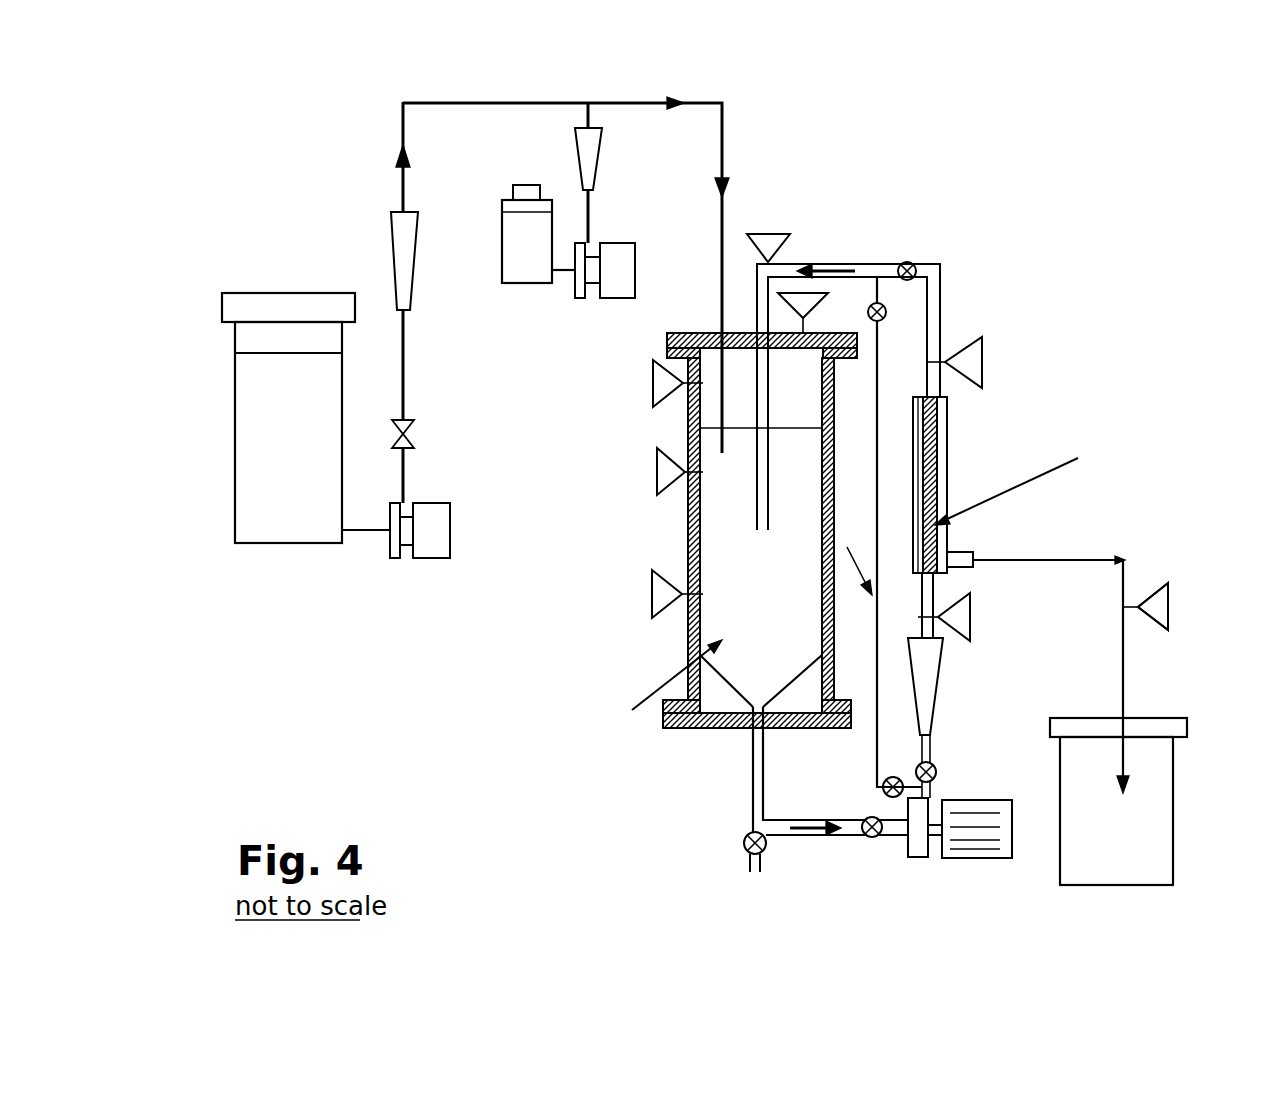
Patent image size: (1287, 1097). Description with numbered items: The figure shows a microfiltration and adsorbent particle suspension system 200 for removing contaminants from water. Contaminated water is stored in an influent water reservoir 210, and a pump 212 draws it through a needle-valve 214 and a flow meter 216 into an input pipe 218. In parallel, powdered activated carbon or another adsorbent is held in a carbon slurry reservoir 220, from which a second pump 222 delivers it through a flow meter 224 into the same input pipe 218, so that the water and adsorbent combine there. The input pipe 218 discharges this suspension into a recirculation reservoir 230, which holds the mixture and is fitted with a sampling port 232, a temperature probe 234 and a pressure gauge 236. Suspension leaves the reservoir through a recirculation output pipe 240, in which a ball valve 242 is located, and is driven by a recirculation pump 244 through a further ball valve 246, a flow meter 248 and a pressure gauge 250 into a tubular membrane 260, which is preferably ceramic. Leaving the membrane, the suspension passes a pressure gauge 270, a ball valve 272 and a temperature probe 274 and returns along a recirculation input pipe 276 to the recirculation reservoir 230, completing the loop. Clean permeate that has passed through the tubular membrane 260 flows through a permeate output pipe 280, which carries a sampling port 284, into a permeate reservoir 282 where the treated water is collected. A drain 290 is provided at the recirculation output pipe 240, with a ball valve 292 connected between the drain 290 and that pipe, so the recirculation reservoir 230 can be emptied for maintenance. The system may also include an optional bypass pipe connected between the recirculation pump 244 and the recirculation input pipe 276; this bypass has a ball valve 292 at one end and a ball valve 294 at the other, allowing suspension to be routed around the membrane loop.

The microfiltration and adsorbent particle suspension system 200 is at (380, 670).
The influent water reservoir 210 is at (284, 527).
The pump 212 is at (427, 548).
The needle-valve 214 is at (407, 437).
The flow meter 216 is at (400, 250).
The input pipe 218 is at (728, 150).
The carbon slurry reservoir 220 is at (515, 243).
The pump 222 is at (618, 250).
The flow meter 224 is at (590, 162).
The recirculation reservoir 230 is at (742, 592).
The sampling port 232 is at (653, 585).
The temperature probe 234 is at (657, 471).
The pressure gauge 236 is at (654, 392).
The recirculation output pipe 240 is at (842, 835).
The ball valve 242 is at (868, 838).
The recirculation pump 244 is at (950, 800).
The ball valve 246 is at (932, 768).
The flow meter 248 is at (940, 680).
The pressure gauge 250 is at (970, 620).
The tubular membrane 260 is at (949, 456).
The pressure gauge 270 is at (982, 343).
The ball valve 272 is at (913, 268).
The temperature probe 274 is at (783, 235).
The recirculation input pipe 276 is at (802, 265).
The permeate output pipe 280 is at (1126, 559).
The permeate reservoir 282 is at (1152, 718).
The sampling port 284 is at (1168, 598).
The drain 290 is at (750, 862).
The ball valve 292 is at (745, 838).
The ball valve 294 is at (885, 310).